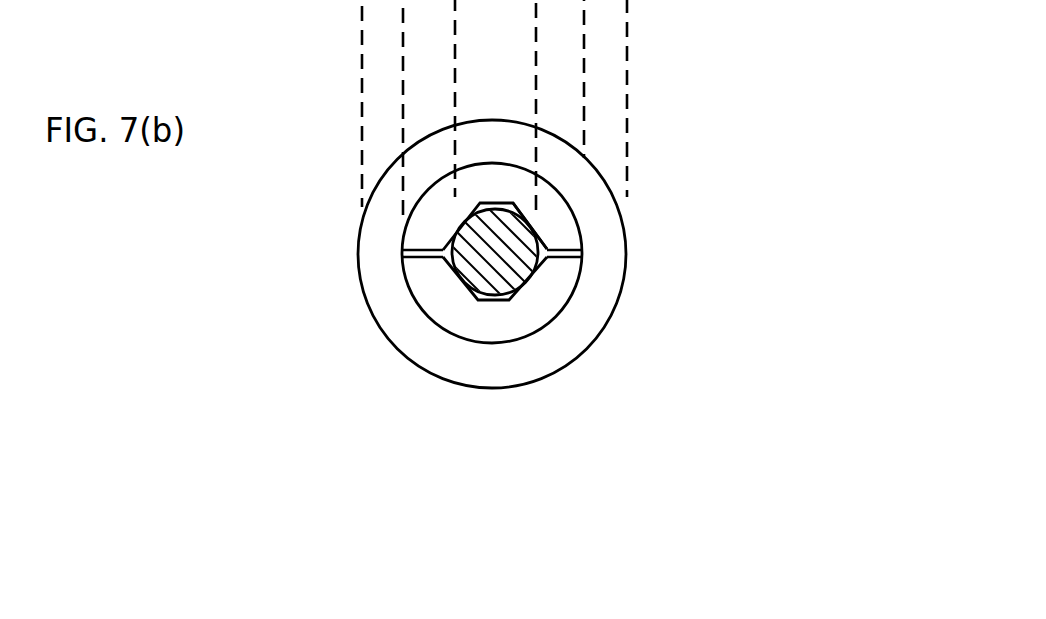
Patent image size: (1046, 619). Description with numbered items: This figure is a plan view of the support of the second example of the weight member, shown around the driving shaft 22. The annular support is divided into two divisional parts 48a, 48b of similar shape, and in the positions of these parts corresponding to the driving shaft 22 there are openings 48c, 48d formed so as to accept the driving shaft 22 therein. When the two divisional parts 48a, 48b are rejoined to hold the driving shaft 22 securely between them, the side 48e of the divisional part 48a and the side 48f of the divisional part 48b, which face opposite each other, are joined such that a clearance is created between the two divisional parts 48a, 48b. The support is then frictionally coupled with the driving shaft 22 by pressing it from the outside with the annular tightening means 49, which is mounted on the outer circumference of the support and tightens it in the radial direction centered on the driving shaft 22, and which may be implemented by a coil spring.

The driving shaft 22 is at (472, 267).
The divisional part 48a is at (545, 205).
The divisional part 48b is at (555, 288).
The opening 48c is at (548, 244).
The opening 48d is at (492, 300).
The side of divisional part 48e is at (584, 245).
The side of divisional part 48f is at (400, 256).
The annular tightening means 49 is at (572, 330).